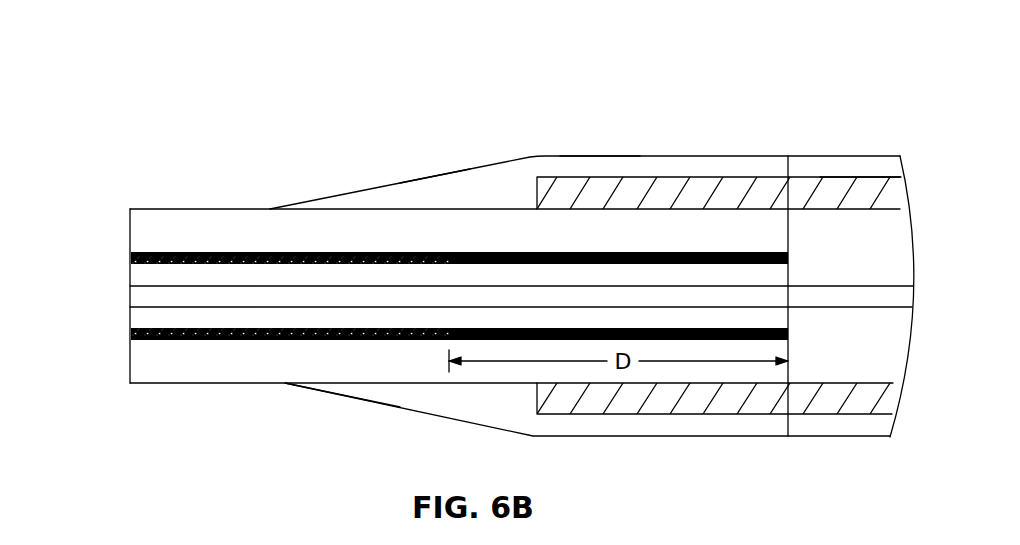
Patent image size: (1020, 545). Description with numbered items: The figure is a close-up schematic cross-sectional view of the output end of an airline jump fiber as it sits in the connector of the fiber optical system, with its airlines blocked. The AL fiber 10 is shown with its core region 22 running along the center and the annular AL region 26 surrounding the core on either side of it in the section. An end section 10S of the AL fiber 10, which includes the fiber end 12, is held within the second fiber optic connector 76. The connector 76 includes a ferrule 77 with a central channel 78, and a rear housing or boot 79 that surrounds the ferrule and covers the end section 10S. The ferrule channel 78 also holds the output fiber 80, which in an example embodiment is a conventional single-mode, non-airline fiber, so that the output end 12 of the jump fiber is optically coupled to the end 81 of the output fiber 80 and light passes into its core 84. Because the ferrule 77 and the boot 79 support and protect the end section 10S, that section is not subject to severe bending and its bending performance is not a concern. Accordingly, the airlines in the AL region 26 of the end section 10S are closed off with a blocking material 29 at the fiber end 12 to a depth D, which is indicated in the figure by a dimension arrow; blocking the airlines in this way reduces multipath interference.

The AL fiber 10 is at (238, 384).
The end section of AL jump fiber 10S is at (437, 385).
The output end of AL jump fiber 12 is at (789, 373).
The core region 22 is at (162, 308).
The annular AL region 26 is at (130, 334).
The blocking material 29 is at (650, 252).
The second fiber optic connector 76 is at (604, 122).
The ferrule 77 is at (602, 177).
The central channel 78 is at (548, 238).
The boot 79 is at (482, 167).
The output fiber 80 is at (857, 208).
The end of output fiber 81 is at (790, 243).
The core of output fiber 84 is at (812, 285).